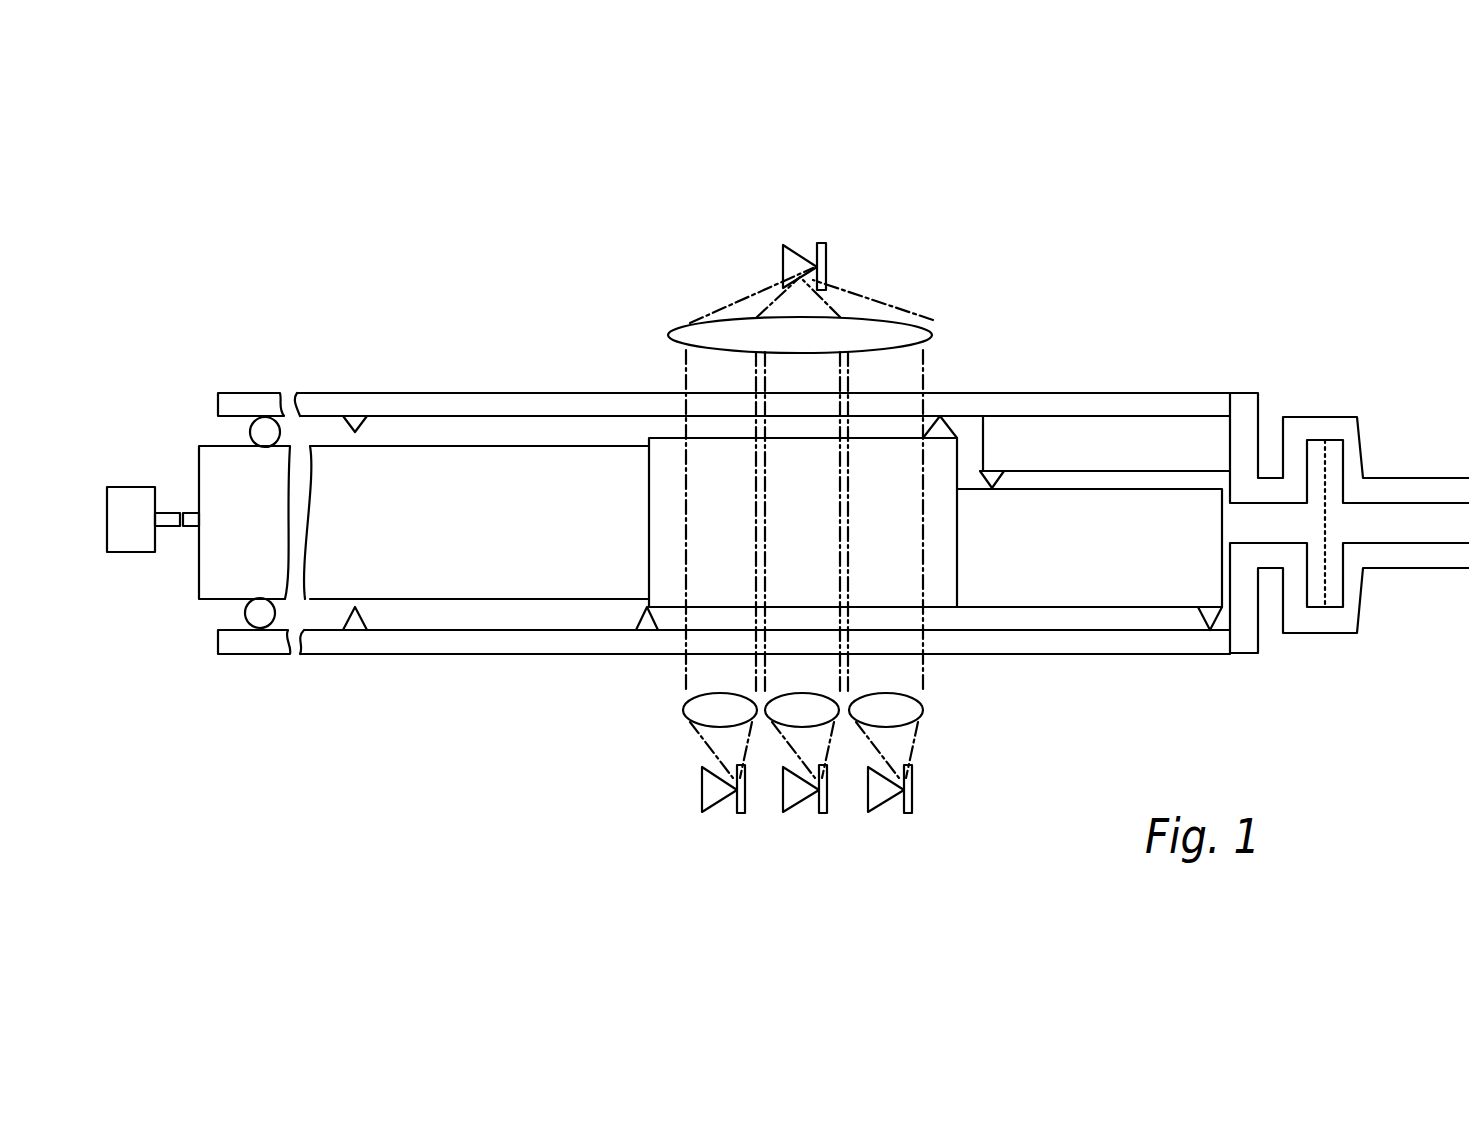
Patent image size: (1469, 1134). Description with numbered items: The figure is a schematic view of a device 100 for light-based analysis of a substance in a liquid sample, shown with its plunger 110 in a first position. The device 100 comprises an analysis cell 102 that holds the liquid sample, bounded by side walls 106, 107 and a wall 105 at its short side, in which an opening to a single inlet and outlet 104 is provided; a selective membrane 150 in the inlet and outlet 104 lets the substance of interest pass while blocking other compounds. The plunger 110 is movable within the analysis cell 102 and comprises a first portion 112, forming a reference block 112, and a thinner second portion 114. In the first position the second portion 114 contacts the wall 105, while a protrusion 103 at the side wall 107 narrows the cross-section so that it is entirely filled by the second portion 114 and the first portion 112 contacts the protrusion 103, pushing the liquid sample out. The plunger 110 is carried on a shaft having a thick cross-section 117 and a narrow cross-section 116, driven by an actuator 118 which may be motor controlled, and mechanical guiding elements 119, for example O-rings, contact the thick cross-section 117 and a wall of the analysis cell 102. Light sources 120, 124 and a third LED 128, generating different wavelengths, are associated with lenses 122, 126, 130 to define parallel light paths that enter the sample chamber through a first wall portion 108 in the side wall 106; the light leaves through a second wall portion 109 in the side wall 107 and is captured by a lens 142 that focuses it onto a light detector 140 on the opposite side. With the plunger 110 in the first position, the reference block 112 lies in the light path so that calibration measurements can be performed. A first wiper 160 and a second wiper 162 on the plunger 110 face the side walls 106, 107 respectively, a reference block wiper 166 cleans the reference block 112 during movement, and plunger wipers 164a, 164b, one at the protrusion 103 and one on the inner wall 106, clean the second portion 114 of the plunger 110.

The device 100 is at (1160, 321).
The analysis cell 102 is at (586, 352).
The protrusion 103 is at (1175, 408).
The inlet and outlet 104 is at (1427, 492).
The wall 105 is at (1262, 410).
The side wall 106 is at (272, 656).
The side wall 107 is at (260, 396).
The first wall portion 108 is at (805, 652).
The second wall portion 109 is at (818, 397).
The plunger 110 is at (620, 478).
The first portion 112 is at (648, 528).
The second portion 114 is at (1015, 590).
The narrow cross-section 116 is at (168, 523).
The thick cross-section 117 is at (327, 572).
The actuator 118 is at (138, 538).
The mechanical guiding element 119 is at (257, 624).
The light source 120 is at (705, 795).
The lens 122 is at (685, 727).
The light source 124 is at (798, 798).
The lens 126 is at (793, 720).
The third LED 128 is at (878, 795).
The lens 130 is at (913, 722).
The light detector 140 is at (808, 263).
The lens 142 is at (917, 323).
The selective membrane 150 is at (1328, 456).
The first wiper 160 is at (1213, 618).
The second wiper 162 is at (950, 434).
The plunger wiper 164a is at (992, 482).
The plunger wiper 164b is at (647, 608).
The reference block wiper 166 is at (353, 628).